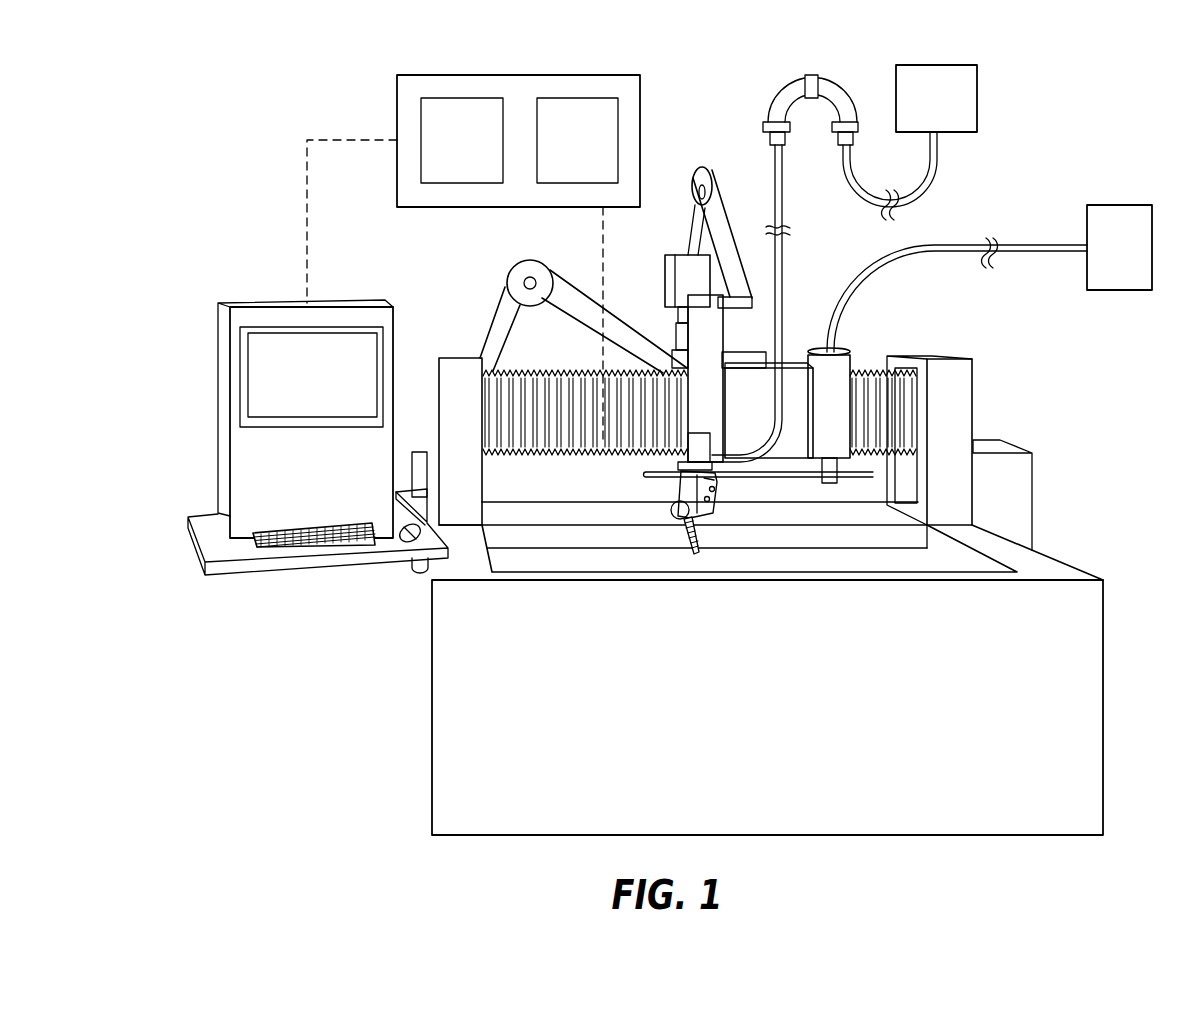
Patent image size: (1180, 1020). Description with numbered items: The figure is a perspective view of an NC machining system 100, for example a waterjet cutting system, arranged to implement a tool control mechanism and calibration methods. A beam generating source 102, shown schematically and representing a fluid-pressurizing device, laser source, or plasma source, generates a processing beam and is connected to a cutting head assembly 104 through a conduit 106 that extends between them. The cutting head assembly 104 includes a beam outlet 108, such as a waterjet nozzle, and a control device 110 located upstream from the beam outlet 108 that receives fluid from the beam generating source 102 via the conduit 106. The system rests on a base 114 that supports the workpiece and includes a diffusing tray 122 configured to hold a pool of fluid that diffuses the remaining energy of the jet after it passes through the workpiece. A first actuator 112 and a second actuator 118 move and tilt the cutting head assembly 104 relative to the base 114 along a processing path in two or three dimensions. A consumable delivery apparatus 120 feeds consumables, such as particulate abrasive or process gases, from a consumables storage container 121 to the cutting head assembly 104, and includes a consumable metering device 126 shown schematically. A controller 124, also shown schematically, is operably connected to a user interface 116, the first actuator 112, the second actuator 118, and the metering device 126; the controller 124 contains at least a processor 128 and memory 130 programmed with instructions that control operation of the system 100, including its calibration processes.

The NC machining system 100 is at (238, 135).
The beam generating source 102 is at (977, 95).
The cutting head assembly 104 is at (702, 428).
The conduit 106 is at (783, 188).
The beam outlet 108 is at (695, 555).
The control device 110 is at (678, 465).
The first actuator 112 is at (638, 390).
The base 114 is at (432, 722).
The user interface 116 is at (272, 547).
The second actuator 118 is at (758, 405).
The consumable delivery apparatus 120 is at (858, 327).
The consumables storage container 121 is at (1118, 205).
The diffusing tray 122 is at (925, 562).
The controller 124 is at (622, 75).
The consumable metering device 126 is at (832, 481).
The processor 128 is at (452, 98).
The memory 130 is at (576, 98).